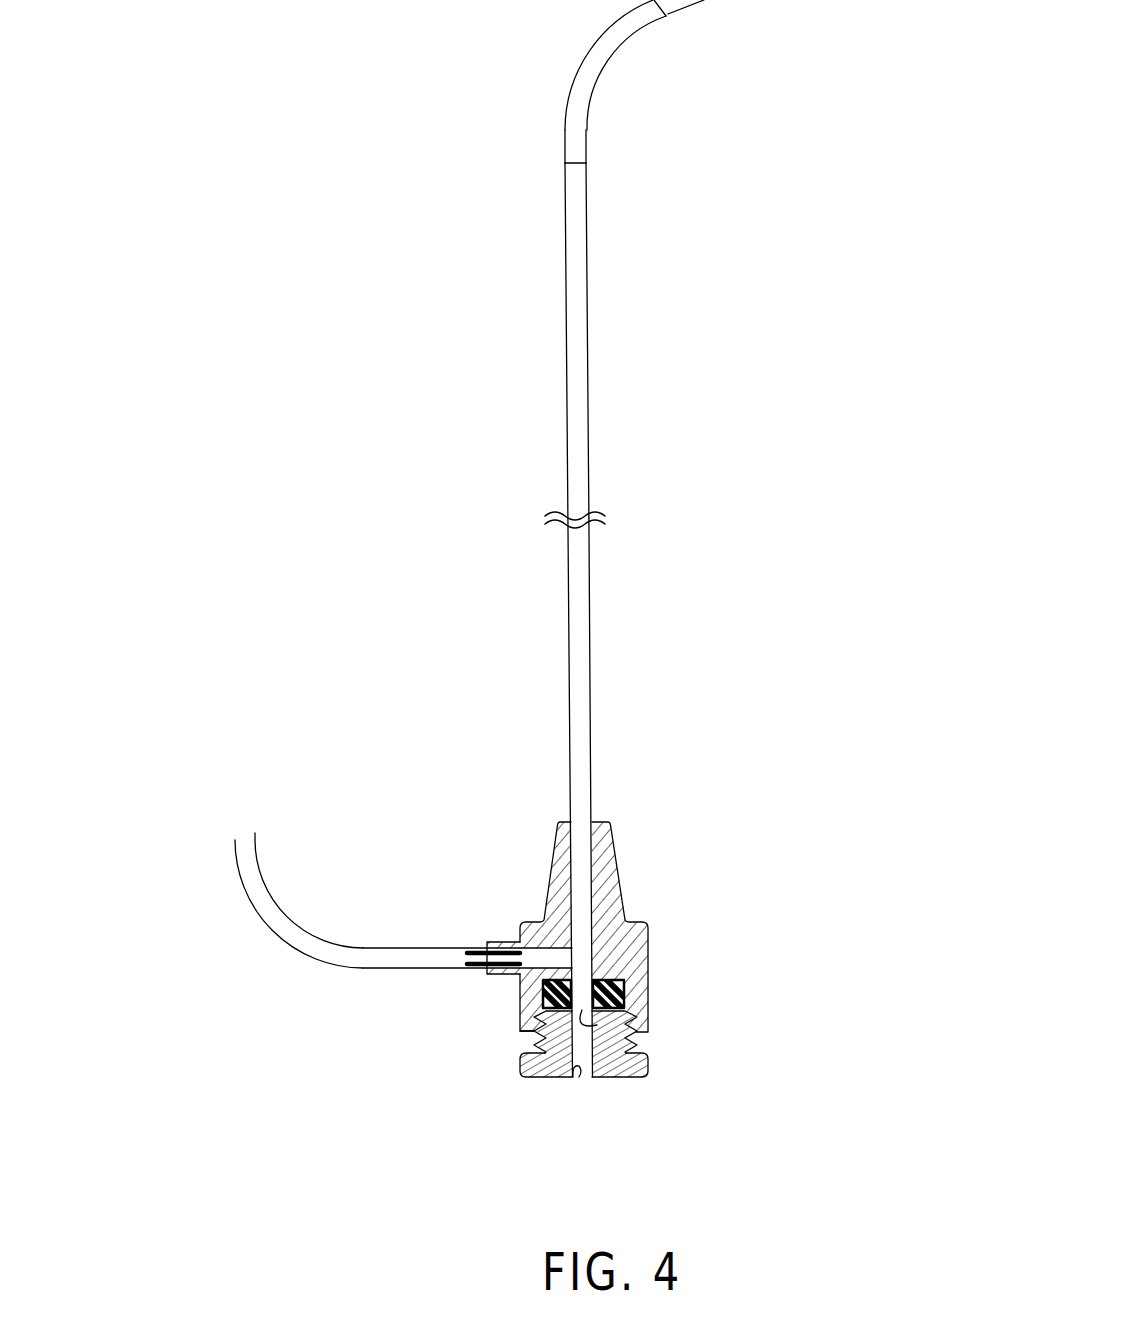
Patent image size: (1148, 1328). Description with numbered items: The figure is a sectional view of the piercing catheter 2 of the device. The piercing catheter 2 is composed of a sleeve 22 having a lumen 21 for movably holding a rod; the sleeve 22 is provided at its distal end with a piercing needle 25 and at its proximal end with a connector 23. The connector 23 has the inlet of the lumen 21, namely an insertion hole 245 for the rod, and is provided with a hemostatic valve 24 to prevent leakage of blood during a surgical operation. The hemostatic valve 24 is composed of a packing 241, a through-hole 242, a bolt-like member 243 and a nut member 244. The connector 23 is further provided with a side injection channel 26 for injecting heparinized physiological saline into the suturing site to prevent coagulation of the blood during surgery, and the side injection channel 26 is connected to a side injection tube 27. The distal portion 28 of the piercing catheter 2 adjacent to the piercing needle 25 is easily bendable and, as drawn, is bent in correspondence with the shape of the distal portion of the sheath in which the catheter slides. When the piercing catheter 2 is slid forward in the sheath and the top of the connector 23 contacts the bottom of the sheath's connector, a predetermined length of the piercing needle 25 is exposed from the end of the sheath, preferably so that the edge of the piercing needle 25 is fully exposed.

The piercing catheter 2 is at (613, 538).
The lumen 21 is at (567, 398).
The sleeve 22 is at (590, 636).
The connector 23 is at (622, 877).
The hemostatic valve 24 is at (585, 1054).
The piercing needle 25 is at (682, 8).
The side injection channel 26 is at (493, 943).
The side injection tube 27 is at (292, 943).
The distal portion 28 is at (589, 108).
The packing 241 is at (634, 985).
The through-hole 242 is at (632, 1038).
The bolt-like member 243 is at (632, 1077).
The nut member 244 is at (520, 1017).
The insertion hole 245 is at (577, 1076).